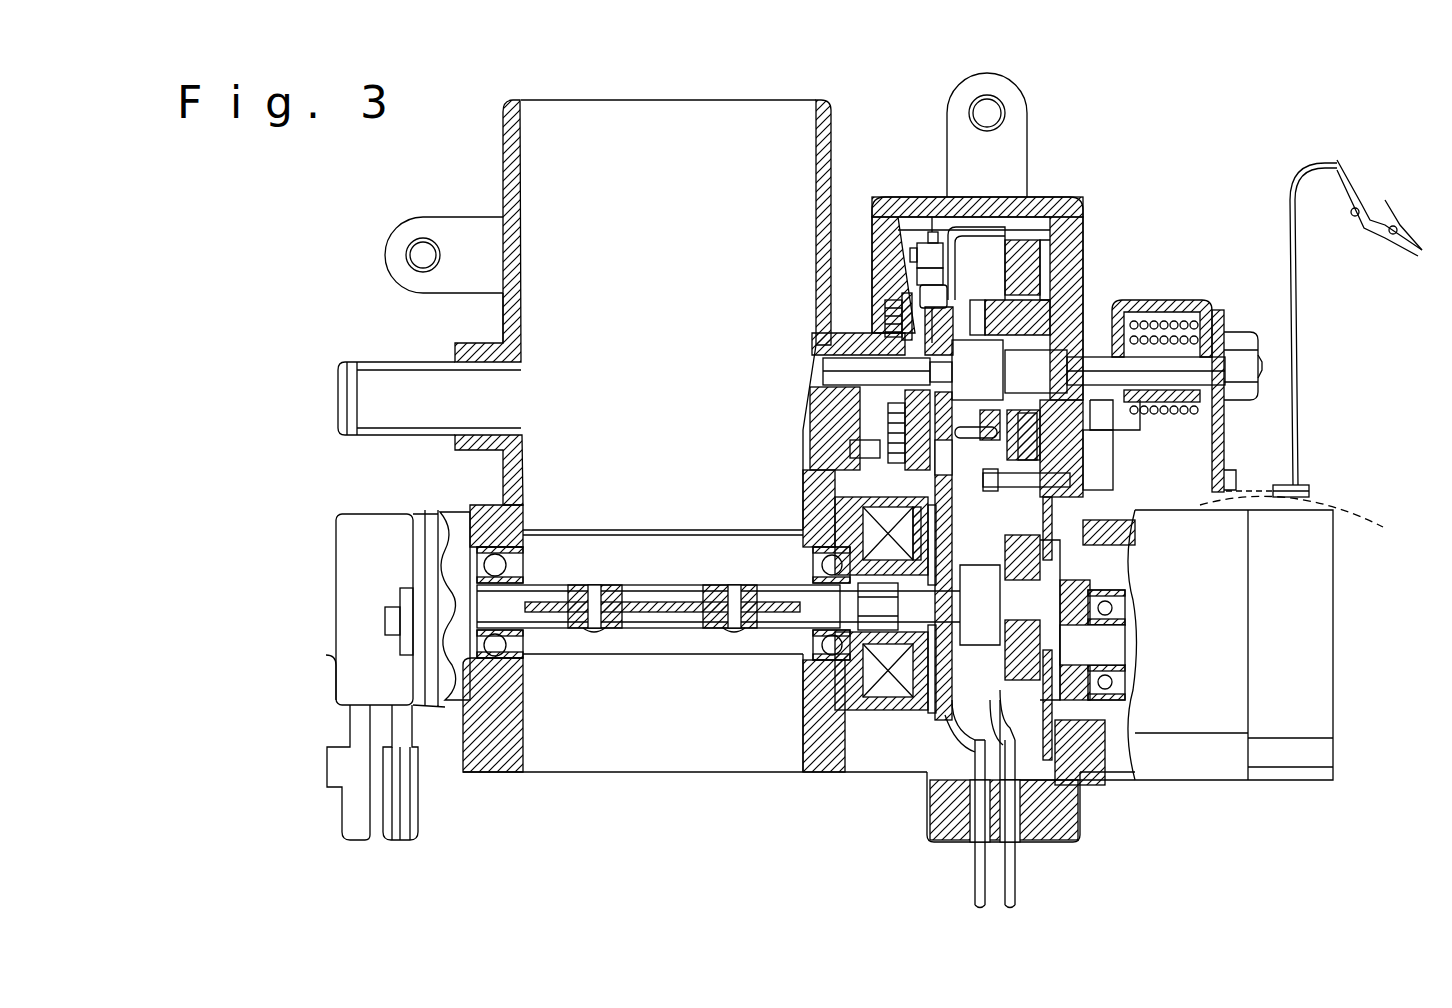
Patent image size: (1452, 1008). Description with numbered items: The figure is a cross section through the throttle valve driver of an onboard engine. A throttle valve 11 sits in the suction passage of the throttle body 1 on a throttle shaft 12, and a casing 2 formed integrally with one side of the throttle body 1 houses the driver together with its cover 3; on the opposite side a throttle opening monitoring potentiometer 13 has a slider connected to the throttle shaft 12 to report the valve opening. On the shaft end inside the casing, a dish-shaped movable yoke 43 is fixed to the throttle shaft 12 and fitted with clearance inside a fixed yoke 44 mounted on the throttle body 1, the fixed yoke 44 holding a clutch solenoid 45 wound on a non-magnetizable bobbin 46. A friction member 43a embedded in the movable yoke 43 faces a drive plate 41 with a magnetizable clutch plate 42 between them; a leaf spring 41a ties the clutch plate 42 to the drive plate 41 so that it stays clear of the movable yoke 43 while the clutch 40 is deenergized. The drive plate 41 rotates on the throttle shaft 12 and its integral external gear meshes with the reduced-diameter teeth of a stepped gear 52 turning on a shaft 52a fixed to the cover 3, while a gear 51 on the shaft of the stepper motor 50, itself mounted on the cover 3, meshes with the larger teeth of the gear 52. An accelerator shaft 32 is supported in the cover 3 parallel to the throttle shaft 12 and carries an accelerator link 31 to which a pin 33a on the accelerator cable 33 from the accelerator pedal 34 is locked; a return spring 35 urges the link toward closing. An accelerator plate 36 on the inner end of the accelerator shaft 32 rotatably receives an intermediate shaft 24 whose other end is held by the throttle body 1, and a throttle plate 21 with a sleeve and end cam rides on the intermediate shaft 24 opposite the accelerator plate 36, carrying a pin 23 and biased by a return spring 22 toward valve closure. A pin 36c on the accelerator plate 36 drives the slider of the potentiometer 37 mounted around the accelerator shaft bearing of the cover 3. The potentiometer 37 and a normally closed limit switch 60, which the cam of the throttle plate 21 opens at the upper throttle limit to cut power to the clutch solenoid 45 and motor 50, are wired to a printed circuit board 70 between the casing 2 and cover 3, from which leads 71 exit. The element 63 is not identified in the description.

The throttle body 1 is at (505, 186).
The casing 2 is at (1040, 203).
The cover 3 is at (1078, 198).
The throttle valve 11 is at (658, 706).
The throttle shaft 12 is at (780, 612).
The throttle opening monitoring potentiometer 13 is at (383, 530).
The throttle plate 21 is at (898, 245).
The return spring 22 is at (882, 300).
The pin 23 is at (880, 463).
The intermediate shaft 24 is at (858, 355).
The accelerator link 31 is at (1220, 432).
The accelerator shaft 32 is at (1228, 340).
The accelerator cable 33 is at (1297, 341).
The pin 33a is at (1304, 485).
The accelerator pedal 34 is at (1361, 220).
The return spring 35 is at (1153, 305).
The accelerator plate 36 is at (983, 320).
The pin 36c is at (970, 470).
The potentiometer 37 is at (1033, 302).
The clutch 40 is at (826, 704).
The drive plate 41 is at (952, 668).
The leaf spring 41a is at (960, 735).
The clutch plate 42 is at (912, 722).
The movable yoke 43 is at (887, 690).
The friction member 43a is at (866, 520).
The fixed yoke 44 is at (815, 742).
The clutch solenoid 45 is at (868, 728).
The bobbin 46 is at (880, 740).
The motor 50 is at (1203, 728).
The gear 51 is at (1097, 793).
The gear 52 is at (1107, 507).
The shaft 52a is at (1307, 537).
The limit switch 60 is at (930, 235).
The nut 63 is at (910, 295).
The printed circuit board 70 is at (1050, 740).
The leads 71 is at (1013, 874).